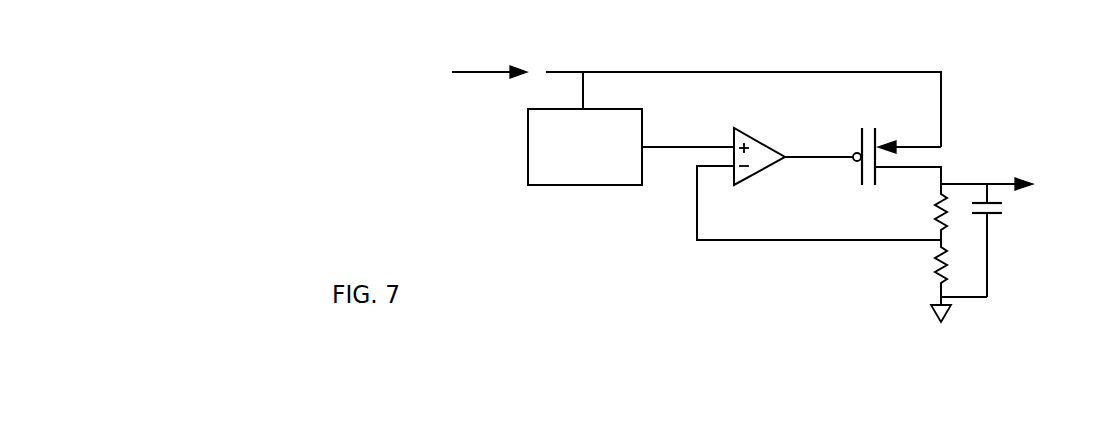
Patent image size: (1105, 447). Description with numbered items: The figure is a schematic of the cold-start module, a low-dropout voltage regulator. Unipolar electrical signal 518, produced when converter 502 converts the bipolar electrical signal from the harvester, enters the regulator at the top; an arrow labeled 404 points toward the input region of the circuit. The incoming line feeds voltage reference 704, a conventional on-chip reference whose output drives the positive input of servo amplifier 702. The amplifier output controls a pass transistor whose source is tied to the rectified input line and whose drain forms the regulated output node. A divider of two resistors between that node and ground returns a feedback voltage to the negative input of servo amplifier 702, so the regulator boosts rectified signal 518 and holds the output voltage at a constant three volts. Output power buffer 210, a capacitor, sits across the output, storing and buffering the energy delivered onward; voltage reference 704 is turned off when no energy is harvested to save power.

The voltage regulator circuit 404 is at (298, 48).
The converter 502 is at (388, 81).
The unipolar electrical signal 518 is at (696, 92).
The voltage reference 704 is at (528, 148).
The servo amplifier 702 is at (762, 157).
The output power buffer 210 is at (1005, 215).